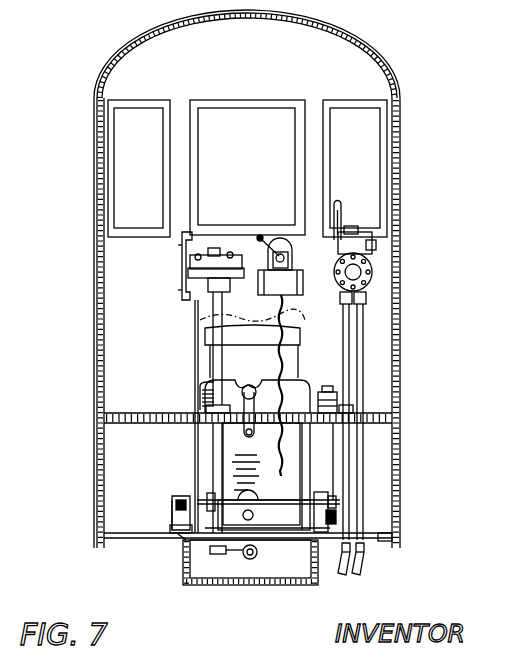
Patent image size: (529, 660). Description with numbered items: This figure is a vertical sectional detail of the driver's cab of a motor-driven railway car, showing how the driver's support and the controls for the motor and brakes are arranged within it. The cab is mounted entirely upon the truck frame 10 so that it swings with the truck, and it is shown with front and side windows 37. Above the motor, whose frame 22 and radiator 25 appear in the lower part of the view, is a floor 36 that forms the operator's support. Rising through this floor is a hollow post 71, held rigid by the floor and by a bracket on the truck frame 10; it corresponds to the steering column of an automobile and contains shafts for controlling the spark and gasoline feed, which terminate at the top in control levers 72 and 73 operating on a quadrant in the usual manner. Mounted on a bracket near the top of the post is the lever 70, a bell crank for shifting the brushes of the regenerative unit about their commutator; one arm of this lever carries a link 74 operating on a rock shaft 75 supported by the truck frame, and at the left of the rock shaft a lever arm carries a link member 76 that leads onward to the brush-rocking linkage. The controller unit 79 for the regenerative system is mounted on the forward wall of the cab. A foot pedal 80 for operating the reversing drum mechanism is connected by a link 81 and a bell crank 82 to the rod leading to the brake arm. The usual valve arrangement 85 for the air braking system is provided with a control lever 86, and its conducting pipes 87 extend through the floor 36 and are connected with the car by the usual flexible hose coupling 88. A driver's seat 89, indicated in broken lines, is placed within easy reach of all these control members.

The truck frame 10 is at (184, 552).
The frame 22 is at (252, 560).
The radiator 25 is at (205, 390).
The floor 36 is at (112, 418).
The windows 37 is at (247, 168).
The lever 70 is at (184, 232).
The hollow post 71 is at (216, 352).
The control lever 72 is at (199, 256).
The control lever 73 is at (231, 252).
The link 74 is at (196, 324).
The rock shaft 75 is at (205, 498).
The link member 76 is at (178, 516).
The controller unit 79 is at (278, 243).
The foot pedal 80 is at (340, 396).
The link 81 is at (334, 465).
The bell crank 82 is at (330, 514).
The valve arrangement 85 is at (376, 254).
The control lever 86 is at (342, 212).
The conducting pipes 87 is at (356, 342).
The flexible hose coupling 88 is at (368, 560).
The driver's seat 89 is at (286, 320).